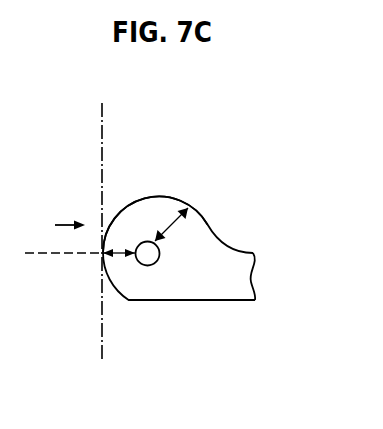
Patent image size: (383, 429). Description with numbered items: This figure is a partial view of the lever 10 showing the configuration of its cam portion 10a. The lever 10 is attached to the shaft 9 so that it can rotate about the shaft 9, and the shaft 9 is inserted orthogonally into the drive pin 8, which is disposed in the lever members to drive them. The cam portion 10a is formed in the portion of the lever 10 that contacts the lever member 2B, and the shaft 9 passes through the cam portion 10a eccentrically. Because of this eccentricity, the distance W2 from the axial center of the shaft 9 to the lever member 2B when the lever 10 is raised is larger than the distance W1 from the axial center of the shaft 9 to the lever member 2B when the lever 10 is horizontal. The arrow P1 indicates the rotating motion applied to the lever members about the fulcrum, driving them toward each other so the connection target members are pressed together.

The lever member 2B is at (104, 122).
The cam portion 10a is at (148, 199).
The rotating motion P1 is at (56, 222).
The distance W2 is at (173, 229).
The distance W1 is at (127, 255).
The drive pin 8 is at (40, 258).
The shaft 9 is at (150, 267).
The lever 10 is at (223, 291).